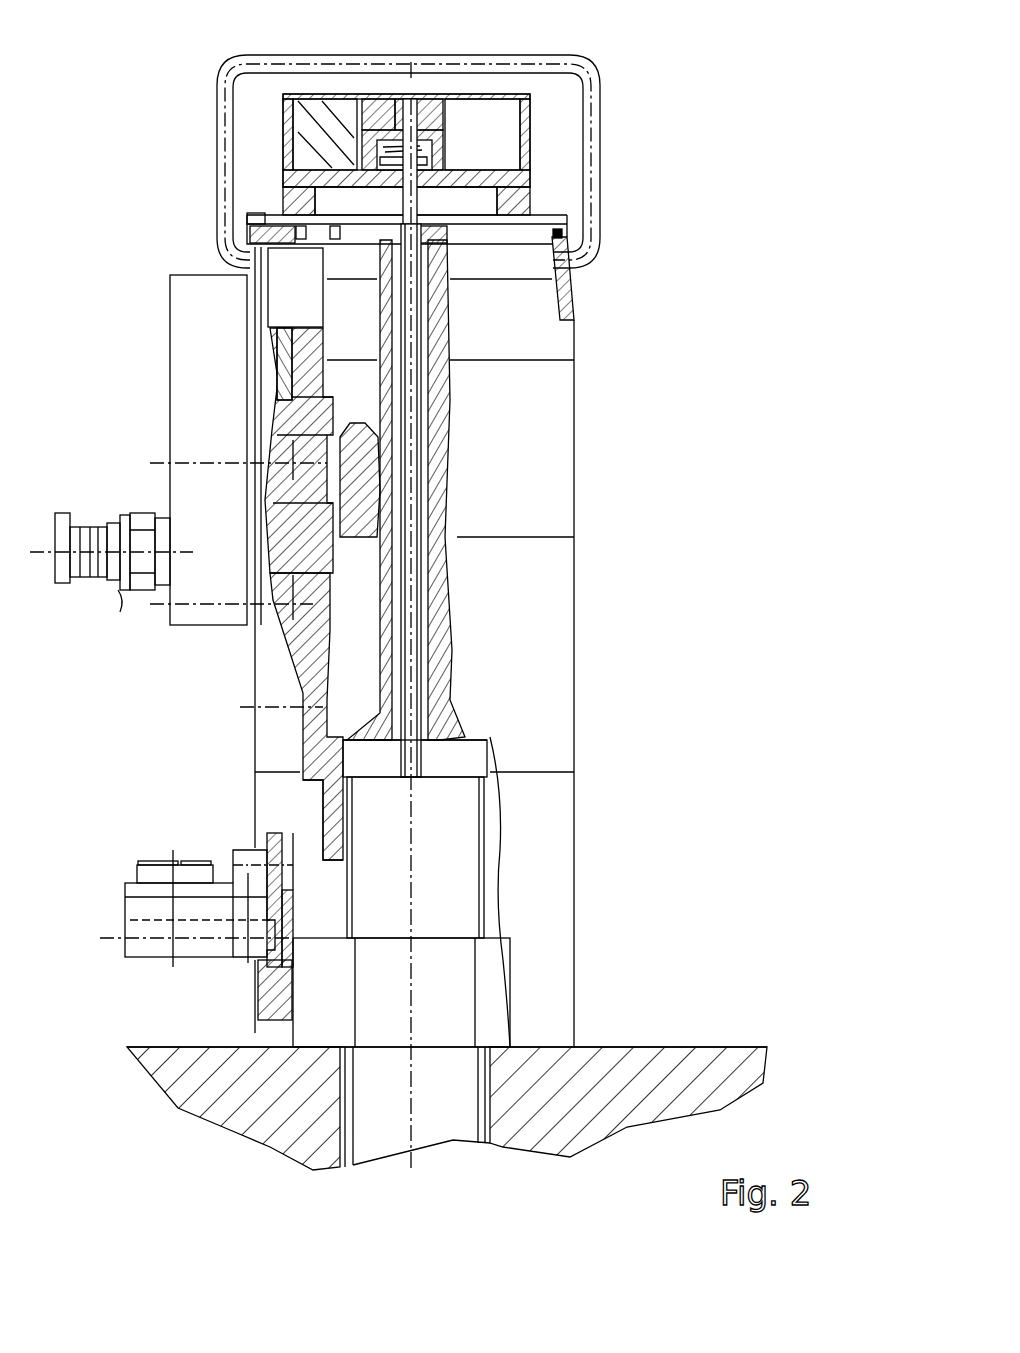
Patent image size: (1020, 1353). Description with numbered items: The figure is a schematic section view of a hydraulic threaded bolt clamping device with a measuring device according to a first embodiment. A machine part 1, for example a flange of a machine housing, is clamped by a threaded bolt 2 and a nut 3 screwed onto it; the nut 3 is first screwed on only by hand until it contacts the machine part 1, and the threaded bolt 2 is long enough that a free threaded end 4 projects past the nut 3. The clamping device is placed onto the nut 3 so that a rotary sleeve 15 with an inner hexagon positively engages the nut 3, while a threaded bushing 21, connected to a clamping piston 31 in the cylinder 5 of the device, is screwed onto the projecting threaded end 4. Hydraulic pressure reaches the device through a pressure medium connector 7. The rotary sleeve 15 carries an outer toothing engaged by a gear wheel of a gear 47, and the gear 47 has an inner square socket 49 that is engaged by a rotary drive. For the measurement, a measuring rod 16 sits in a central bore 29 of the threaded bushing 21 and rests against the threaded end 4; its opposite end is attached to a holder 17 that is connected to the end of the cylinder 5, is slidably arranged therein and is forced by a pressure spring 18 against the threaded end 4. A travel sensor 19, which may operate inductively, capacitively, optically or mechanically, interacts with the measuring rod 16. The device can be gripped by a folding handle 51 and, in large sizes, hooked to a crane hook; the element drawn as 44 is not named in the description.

The machine part 1 is at (170, 1084).
The threaded bolt 2 is at (362, 1110).
The nut 3 is at (435, 987).
The free threaded end 4 is at (443, 800).
The cylinder 5 is at (285, 650).
The pressure medium connector 7 is at (100, 520).
The rotary sleeve 15 is at (300, 907).
The measuring rod 16 is at (412, 437).
The holder 17 is at (407, 224).
The pressure spring 18 is at (560, 234).
The travel sensor 19 is at (435, 123).
The threaded bushing 21 is at (320, 805).
The central bore 29 is at (423, 698).
The clamping piston 31 is at (290, 550).
The block 44 is at (183, 333).
The gear 47 is at (145, 912).
The inner square socket 49 is at (158, 876).
The folding handle 51 is at (230, 105).